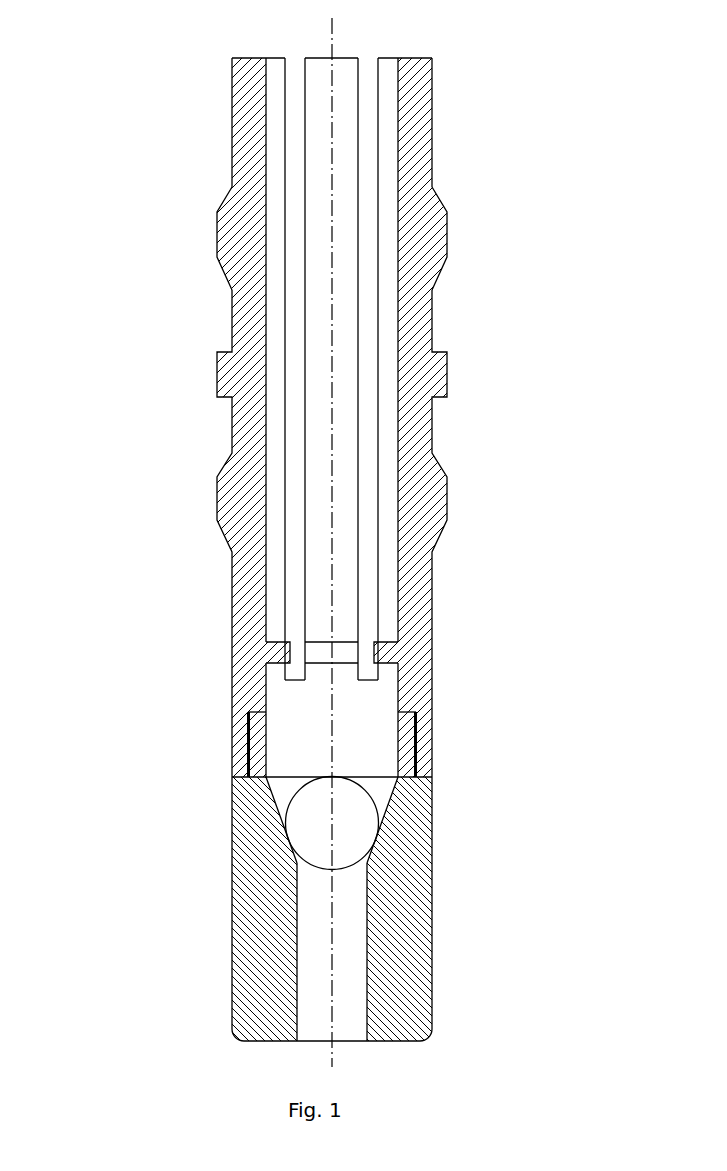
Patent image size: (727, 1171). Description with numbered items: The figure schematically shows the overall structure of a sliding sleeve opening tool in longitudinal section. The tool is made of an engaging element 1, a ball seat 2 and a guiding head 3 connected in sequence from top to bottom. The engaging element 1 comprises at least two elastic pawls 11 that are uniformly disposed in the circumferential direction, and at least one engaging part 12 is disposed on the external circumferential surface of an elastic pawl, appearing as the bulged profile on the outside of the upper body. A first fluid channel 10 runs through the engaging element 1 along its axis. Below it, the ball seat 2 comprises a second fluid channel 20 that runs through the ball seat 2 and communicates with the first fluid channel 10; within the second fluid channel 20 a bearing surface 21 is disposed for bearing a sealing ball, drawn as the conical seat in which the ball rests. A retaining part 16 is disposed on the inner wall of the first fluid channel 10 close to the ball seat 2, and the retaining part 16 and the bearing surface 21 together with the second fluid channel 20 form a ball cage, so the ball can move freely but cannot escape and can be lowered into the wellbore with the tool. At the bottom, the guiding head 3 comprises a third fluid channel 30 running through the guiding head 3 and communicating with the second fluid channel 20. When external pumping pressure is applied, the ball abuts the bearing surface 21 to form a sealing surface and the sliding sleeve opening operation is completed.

The engaging element 1 is at (188, 145).
The first fluid channel 10 is at (365, 575).
The elastic pawl 11 is at (342, 145).
The engaging part 12 is at (218, 233).
The retaining part 16 is at (275, 652).
The ball seat 2 is at (187, 763).
The second fluid channel 20 is at (363, 715).
The bearing surface 21 is at (275, 805).
The guiding head 3 is at (188, 963).
The third fluid channel 30 is at (352, 953).